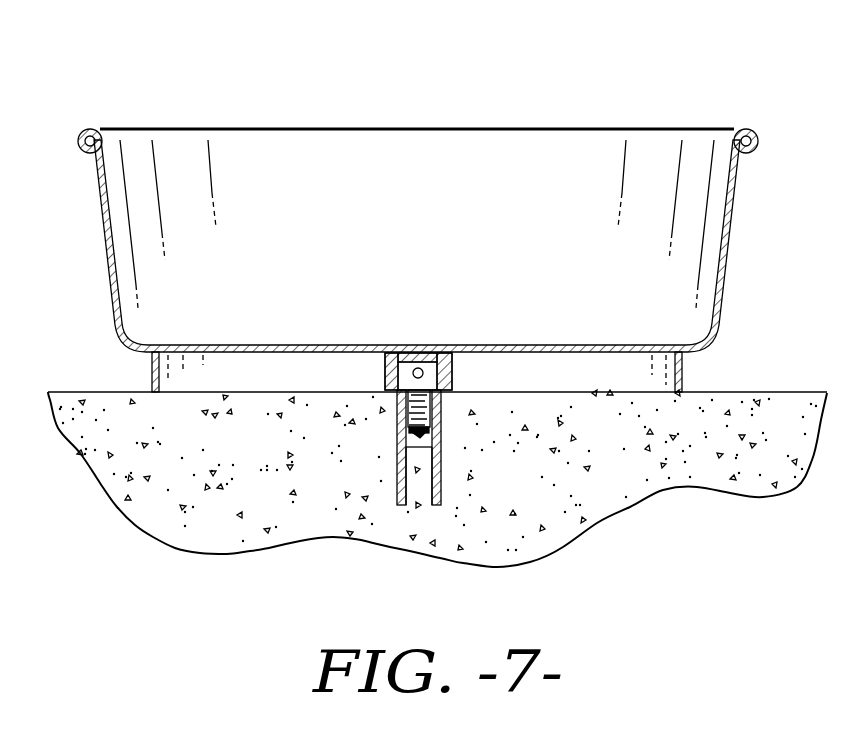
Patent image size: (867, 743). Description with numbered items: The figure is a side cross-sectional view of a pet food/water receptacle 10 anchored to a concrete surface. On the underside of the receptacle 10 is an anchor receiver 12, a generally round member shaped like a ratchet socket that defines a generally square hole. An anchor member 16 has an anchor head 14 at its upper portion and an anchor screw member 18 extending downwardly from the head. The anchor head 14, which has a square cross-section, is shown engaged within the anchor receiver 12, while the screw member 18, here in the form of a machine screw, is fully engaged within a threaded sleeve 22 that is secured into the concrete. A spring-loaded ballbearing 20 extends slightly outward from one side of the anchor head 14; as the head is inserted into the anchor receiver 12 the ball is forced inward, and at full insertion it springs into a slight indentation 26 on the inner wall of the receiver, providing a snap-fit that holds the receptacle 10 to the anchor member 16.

The pet food/water receptacle 10 is at (550, 127).
The anchor receiver 12 is at (452, 372).
The anchor head 14 is at (397, 379).
The anchor member 16 is at (397, 418).
The anchor screw member 18 is at (441, 410).
The spring-loaded ballbearing 20 is at (417, 372).
The threaded sleeve 22 is at (441, 477).
The indentation 26 is at (407, 381).